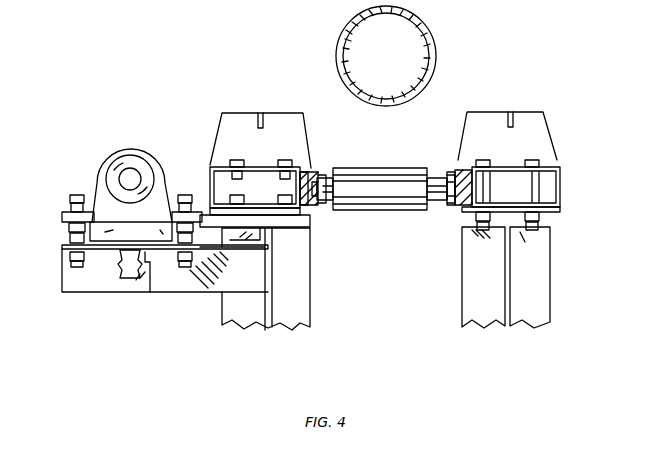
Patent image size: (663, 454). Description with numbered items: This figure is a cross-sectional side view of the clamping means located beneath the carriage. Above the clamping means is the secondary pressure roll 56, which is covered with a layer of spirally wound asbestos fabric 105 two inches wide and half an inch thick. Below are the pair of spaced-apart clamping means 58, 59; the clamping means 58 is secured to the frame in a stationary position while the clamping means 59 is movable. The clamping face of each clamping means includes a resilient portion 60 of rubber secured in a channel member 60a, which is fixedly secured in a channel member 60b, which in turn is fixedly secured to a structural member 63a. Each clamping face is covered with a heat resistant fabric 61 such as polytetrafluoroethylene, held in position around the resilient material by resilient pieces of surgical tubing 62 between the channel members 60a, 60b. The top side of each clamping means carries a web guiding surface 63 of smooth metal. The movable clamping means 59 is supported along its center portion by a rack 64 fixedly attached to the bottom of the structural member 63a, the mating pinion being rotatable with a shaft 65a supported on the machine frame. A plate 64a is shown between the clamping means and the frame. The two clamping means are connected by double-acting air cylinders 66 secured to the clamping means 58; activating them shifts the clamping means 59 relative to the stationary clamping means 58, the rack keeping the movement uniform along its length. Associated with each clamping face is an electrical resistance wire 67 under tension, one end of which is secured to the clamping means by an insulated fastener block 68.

The secondary pressure roll 56 is at (436, 50).
The spirally wound asbestos fabric 105 is at (432, 30).
The clamping means 58 is at (577, 148).
The clamping means 59 is at (184, 145).
The resilient portion 60 is at (312, 205).
The channel member 60a is at (322, 178).
The channel member 60b is at (316, 175).
The heat resistant fabric 61 is at (308, 206).
The surgical tubing 62 is at (321, 176).
The web guiding surface 63 is at (287, 113).
The structural member 63a is at (211, 178).
The rack 64 is at (211, 207).
The base plate 64a is at (298, 222).
The shaft 65a is at (122, 184).
The double-acting air cylinders 66 is at (378, 210).
The wire 67 is at (328, 186).
The insulated fastener block 68 is at (449, 184).